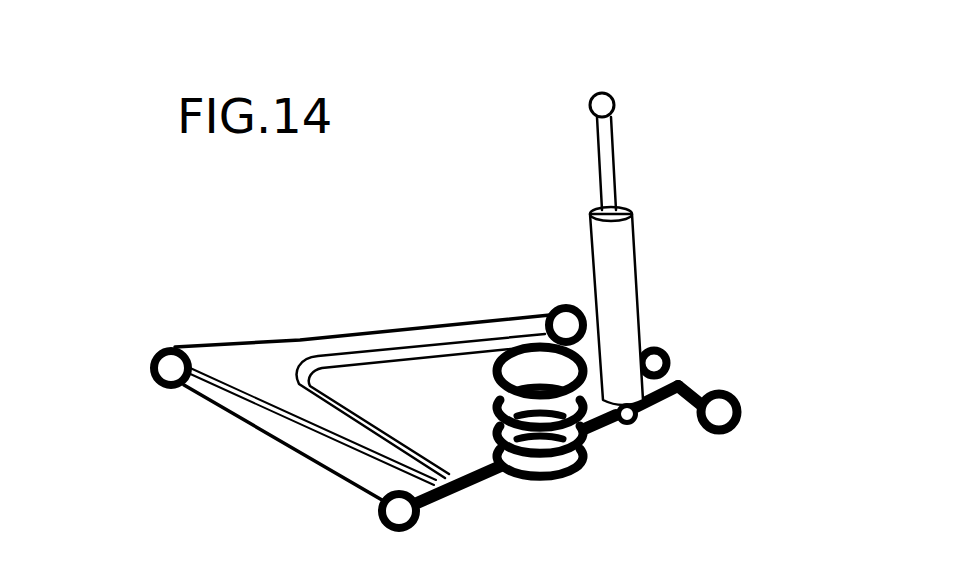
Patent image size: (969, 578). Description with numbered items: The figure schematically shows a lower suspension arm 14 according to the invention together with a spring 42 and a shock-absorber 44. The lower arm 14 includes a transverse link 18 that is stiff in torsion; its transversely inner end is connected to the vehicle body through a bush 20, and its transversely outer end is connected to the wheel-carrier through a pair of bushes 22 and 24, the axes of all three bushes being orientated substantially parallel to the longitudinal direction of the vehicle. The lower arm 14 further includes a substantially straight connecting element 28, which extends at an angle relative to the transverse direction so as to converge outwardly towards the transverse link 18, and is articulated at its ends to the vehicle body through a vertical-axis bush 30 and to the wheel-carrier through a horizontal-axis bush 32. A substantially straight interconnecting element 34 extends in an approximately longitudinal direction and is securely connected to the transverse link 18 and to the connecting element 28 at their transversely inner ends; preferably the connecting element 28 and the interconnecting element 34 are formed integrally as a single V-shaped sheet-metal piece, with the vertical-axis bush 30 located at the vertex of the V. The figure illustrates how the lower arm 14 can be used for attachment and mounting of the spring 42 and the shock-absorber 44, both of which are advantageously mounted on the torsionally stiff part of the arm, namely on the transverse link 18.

The lower arm 14 is at (264, 314).
The transverse link 18 is at (277, 418).
The bush 20 is at (378, 523).
The bush 22 is at (671, 355).
The bush 24 is at (742, 428).
The connecting element 28 is at (347, 340).
The vertical-axis bush 30 is at (154, 353).
The horizontal-axis bush 32 is at (551, 309).
The interconnecting element 34 is at (300, 435).
The spring 42 is at (578, 457).
The shock-absorber 44 is at (623, 272).